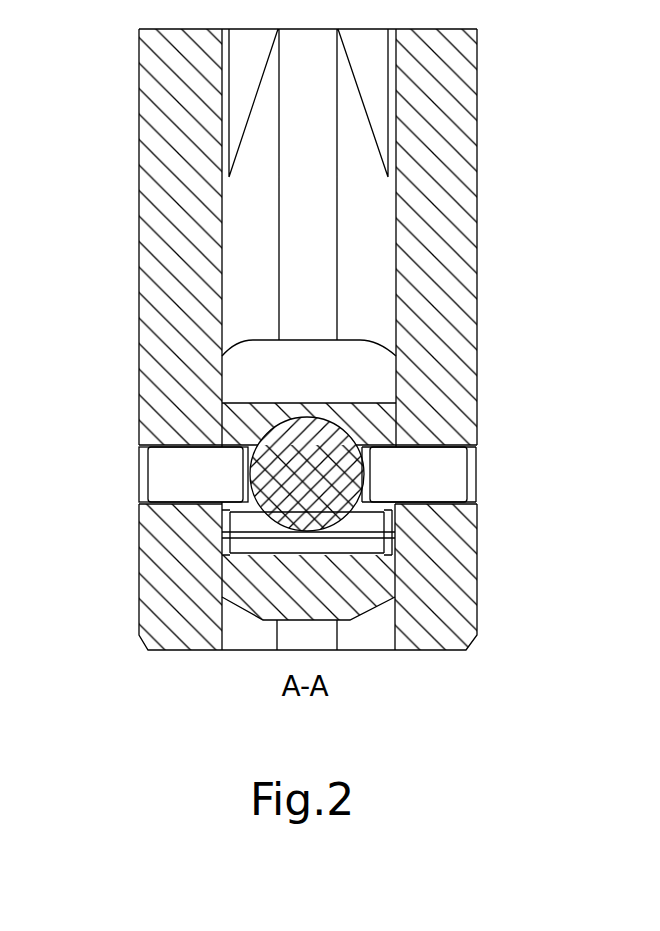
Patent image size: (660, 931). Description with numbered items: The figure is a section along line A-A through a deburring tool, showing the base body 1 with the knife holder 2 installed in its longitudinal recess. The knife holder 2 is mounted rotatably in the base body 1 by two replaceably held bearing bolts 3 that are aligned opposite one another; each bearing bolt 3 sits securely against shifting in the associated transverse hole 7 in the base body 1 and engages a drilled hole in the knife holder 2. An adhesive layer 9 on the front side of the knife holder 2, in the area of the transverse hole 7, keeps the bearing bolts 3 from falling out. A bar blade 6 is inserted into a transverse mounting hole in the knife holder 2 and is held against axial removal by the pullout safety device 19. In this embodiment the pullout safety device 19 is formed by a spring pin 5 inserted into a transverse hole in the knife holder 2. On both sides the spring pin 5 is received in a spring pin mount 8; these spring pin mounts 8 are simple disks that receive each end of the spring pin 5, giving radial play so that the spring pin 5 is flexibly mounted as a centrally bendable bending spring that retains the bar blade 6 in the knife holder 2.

The base body 1 is at (477, 576).
The knife holder 2 is at (377, 347).
The bearing bolt 3 is at (477, 474).
The spring pin 5 is at (262, 537).
The bar blade 6 is at (358, 435).
The transverse hole 7 is at (167, 440).
The spring pin mount 8 is at (230, 547).
The adhesive layer 9 is at (150, 506).
The pullout safety device 19 is at (306, 562).